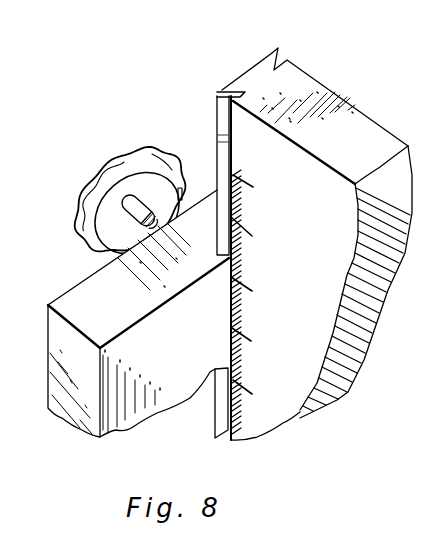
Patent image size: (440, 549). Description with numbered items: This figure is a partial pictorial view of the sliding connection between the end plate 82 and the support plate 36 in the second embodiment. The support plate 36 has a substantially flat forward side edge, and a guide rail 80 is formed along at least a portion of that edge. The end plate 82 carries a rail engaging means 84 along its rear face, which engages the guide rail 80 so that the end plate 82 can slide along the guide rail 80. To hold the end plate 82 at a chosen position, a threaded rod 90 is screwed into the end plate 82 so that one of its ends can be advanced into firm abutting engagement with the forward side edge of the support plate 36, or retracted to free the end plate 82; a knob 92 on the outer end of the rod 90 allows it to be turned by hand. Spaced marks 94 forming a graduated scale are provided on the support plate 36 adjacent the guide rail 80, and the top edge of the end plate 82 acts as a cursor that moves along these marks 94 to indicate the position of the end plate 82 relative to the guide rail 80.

The support plate 36 is at (370, 119).
The guide rail 80 is at (270, 63).
The end plate 82 is at (97, 292).
The rail engaging means 84 is at (228, 262).
The rod 90 is at (181, 188).
The knob 92 is at (122, 173).
The spaced marks 94 is at (235, 290).